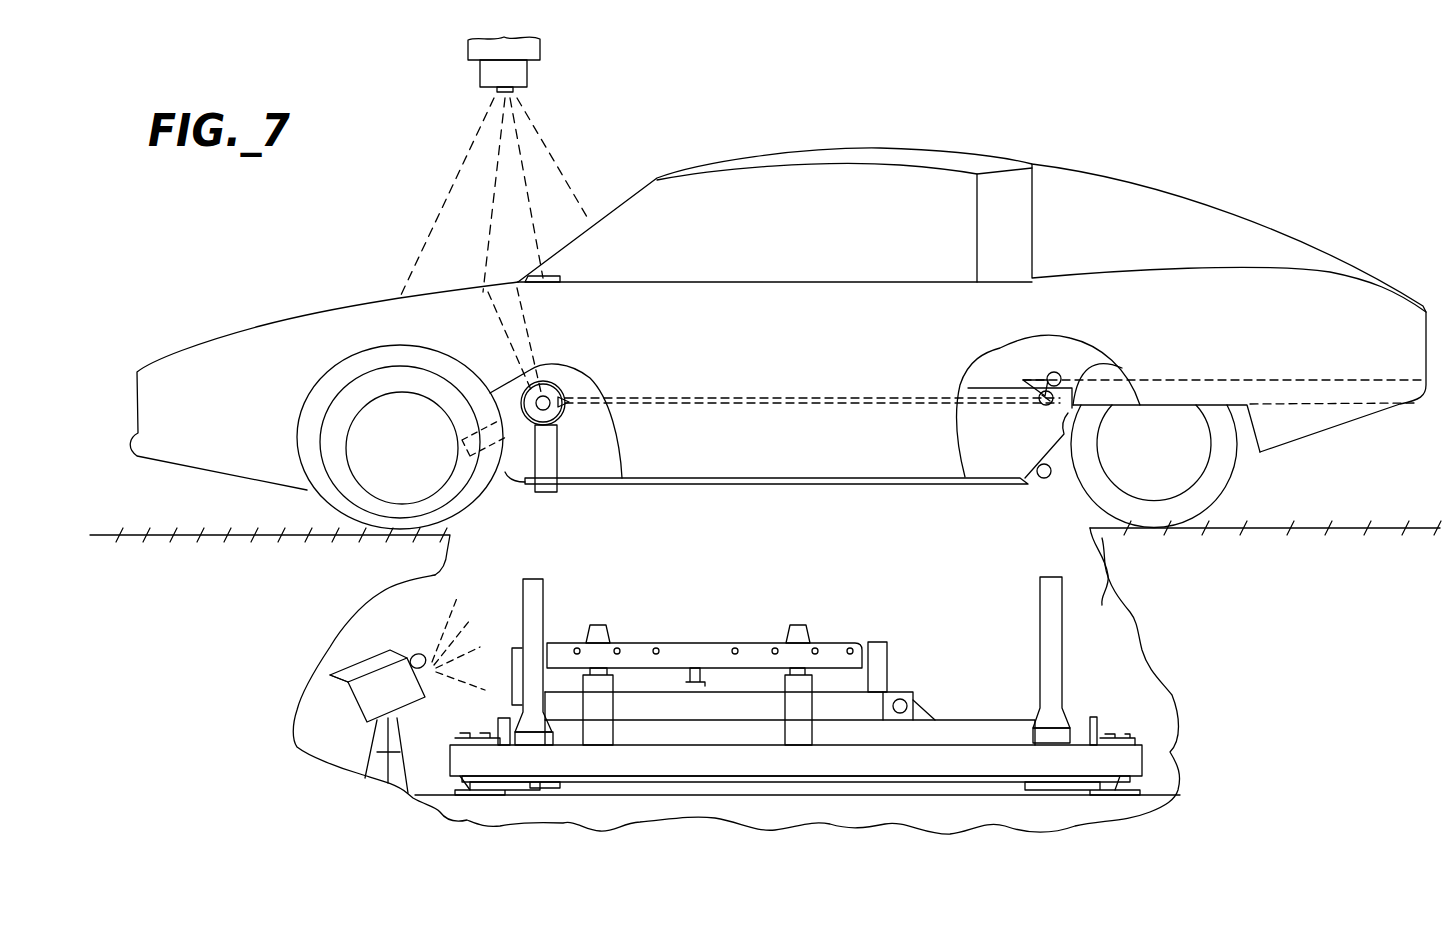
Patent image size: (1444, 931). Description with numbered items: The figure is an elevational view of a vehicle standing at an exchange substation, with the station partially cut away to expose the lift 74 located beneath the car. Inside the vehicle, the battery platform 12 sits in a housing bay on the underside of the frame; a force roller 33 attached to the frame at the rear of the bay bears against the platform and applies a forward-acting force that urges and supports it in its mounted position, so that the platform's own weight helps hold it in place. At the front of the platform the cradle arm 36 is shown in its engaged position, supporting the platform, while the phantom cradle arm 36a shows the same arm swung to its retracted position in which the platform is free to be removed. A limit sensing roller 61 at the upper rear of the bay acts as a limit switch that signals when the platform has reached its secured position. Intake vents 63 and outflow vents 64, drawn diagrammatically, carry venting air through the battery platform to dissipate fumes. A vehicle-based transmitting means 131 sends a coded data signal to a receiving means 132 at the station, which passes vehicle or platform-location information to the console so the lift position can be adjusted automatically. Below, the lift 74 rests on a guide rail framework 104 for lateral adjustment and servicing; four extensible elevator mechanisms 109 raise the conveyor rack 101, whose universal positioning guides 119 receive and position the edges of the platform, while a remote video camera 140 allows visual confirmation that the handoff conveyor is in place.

The battery platform 12 is at (778, 488).
The force roller 33 is at (1042, 478).
The cradle arm 36 is at (548, 490).
The phantom cradle arm 36a is at (503, 478).
The limit sensing roller 61 is at (1054, 372).
The intake vents 63 is at (500, 332).
The outflow vents 64 is at (1248, 380).
The lift 74 is at (895, 585).
The conveyor rack 101 is at (682, 630).
The guide rail framework 104 is at (940, 760).
The extensible elevator mechanisms 109 is at (515, 597).
The universal positioning guides 119 is at (600, 622).
The vehicle-based transmitting means 131 is at (548, 275).
The receiving means 132 is at (530, 72).
The remote video camera 140 is at (366, 655).